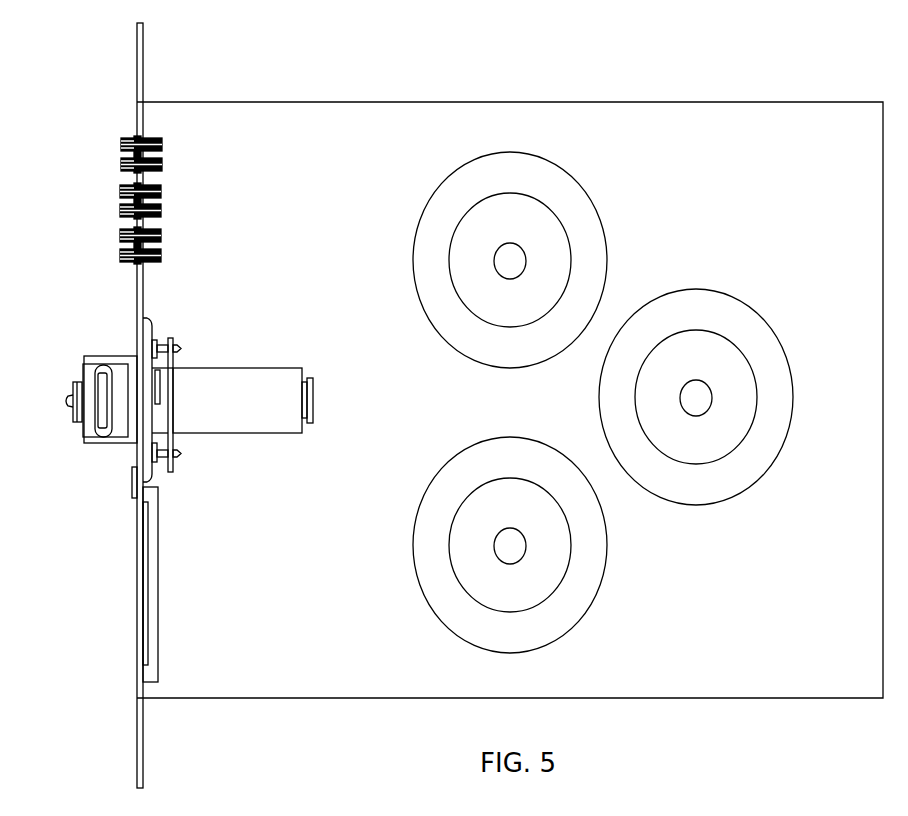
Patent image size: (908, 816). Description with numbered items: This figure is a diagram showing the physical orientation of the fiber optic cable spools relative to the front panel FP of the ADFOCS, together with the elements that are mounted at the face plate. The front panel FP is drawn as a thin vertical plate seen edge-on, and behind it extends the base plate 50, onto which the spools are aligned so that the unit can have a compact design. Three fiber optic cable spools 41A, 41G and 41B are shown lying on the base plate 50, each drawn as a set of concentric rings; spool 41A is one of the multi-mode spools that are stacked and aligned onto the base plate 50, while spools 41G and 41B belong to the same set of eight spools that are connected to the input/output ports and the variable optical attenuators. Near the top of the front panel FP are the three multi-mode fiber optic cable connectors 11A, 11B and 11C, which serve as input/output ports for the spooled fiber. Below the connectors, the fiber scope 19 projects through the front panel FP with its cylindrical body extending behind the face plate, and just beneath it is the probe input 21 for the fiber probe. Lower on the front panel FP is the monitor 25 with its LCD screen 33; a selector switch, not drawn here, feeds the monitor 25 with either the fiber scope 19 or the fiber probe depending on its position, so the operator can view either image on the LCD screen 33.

The base plate 50 is at (776, 669).
The front panel FP is at (137, 293).
The multi-mode input/output port 11A is at (166, 153).
The multi-mode input/output port 11B is at (167, 195).
The multi-mode input/output port 11C is at (166, 240).
The fiber scope 19 is at (84, 442).
The fiber probe 21 is at (137, 488).
The monitor 25 is at (137, 676).
The LCD screen 33 is at (112, 643).
The fiber optic cable spool 41A is at (604, 225).
The fiber optic cable spool 41G is at (790, 362).
The fiber optic cable spool 41B is at (604, 537).